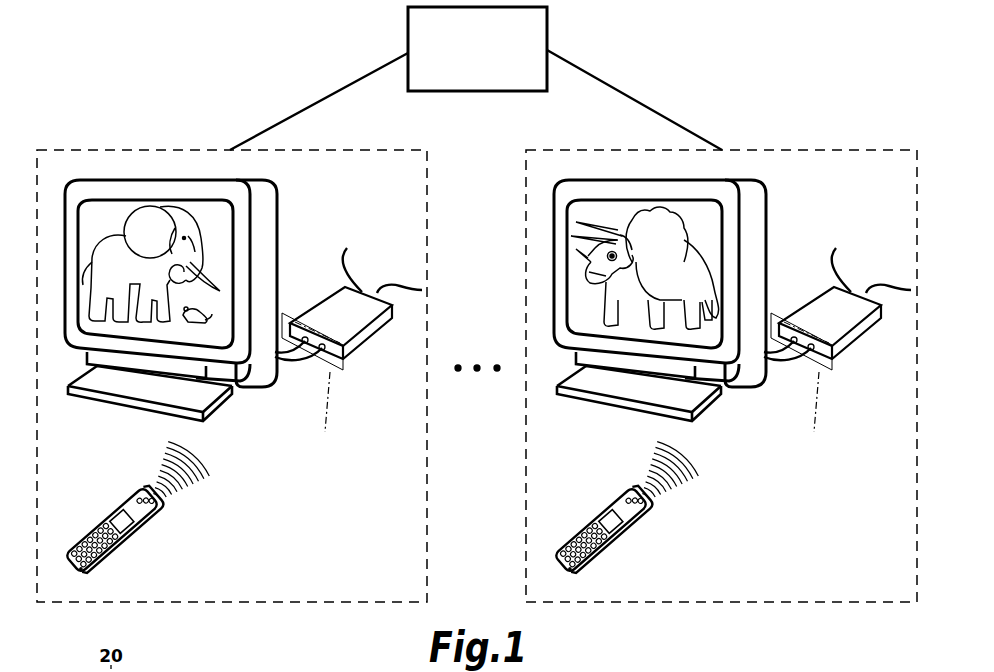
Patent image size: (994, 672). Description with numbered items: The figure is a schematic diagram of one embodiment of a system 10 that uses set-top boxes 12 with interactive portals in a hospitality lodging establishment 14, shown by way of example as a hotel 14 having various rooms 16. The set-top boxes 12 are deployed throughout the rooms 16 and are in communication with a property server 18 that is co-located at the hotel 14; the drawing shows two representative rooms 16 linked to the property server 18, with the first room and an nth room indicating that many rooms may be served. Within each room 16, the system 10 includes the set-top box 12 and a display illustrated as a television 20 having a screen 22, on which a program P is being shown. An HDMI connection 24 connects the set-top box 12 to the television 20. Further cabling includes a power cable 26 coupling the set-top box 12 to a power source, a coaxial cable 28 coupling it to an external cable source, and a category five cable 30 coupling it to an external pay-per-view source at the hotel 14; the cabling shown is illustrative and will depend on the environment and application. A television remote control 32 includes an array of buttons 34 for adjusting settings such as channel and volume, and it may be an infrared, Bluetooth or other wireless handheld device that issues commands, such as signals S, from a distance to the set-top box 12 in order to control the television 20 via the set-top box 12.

The system 10 is at (131, 73).
The set-top box 12 is at (378, 338).
The hospitality lodging establishment 14 is at (660, 108).
The room 16 is at (304, 592).
The property server 18 is at (547, 18).
The television 20 is at (281, 192).
The screen 22 is at (218, 345).
The HDMI connection 24 is at (296, 367).
The power cable 26 is at (279, 360).
The coaxial cable 28 is at (397, 286).
The category five (Cat 5) cable 30 is at (348, 248).
The television remote control 32 is at (128, 545).
The array of buttons 34 is at (97, 528).
The program P is at (115, 213).
The signals S is at (193, 482).